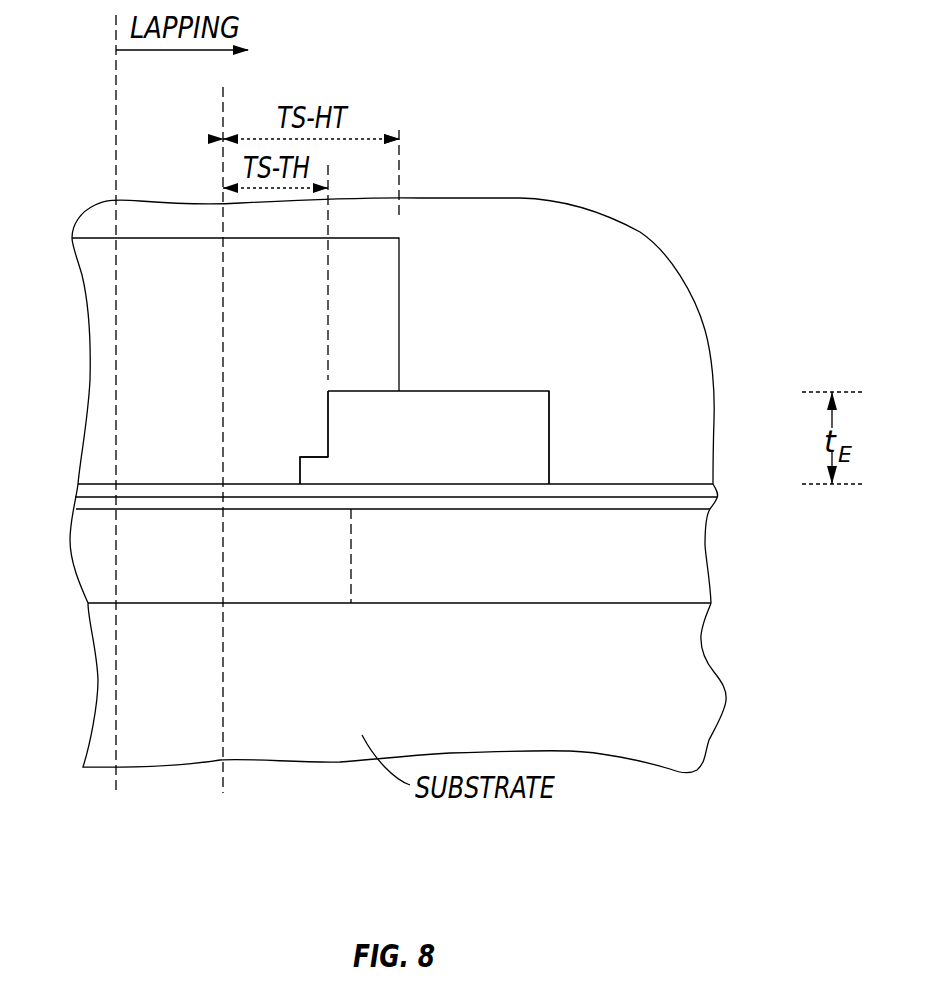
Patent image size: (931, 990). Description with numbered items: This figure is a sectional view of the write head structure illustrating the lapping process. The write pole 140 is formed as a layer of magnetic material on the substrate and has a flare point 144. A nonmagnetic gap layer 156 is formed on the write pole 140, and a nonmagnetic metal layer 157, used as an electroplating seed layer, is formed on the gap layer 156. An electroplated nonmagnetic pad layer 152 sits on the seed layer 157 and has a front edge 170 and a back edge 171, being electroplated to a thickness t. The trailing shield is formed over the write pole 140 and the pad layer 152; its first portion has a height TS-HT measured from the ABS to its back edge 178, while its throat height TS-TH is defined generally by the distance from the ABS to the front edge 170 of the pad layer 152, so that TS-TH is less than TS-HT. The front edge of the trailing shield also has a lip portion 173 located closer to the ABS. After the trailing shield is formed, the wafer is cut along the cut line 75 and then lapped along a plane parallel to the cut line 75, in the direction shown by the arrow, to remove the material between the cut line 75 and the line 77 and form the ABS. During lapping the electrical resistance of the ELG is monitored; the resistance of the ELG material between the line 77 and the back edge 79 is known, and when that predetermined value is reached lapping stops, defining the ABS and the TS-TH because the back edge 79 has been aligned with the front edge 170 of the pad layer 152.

The cut line 75 is at (116, 190).
The line 77 is at (223, 110).
The back edge 79 is at (328, 302).
The back edge 178 is at (400, 286).
The pad layer 152 is at (489, 391).
The front edge 170 is at (328, 410).
The back edge 171 is at (549, 437).
The lip portion 173 is at (312, 458).
The nonmagnetic metal layer 157 is at (613, 492).
The gap layer 156 is at (698, 503).
The write pole 140 is at (697, 594).
The flare point 144 is at (353, 563).